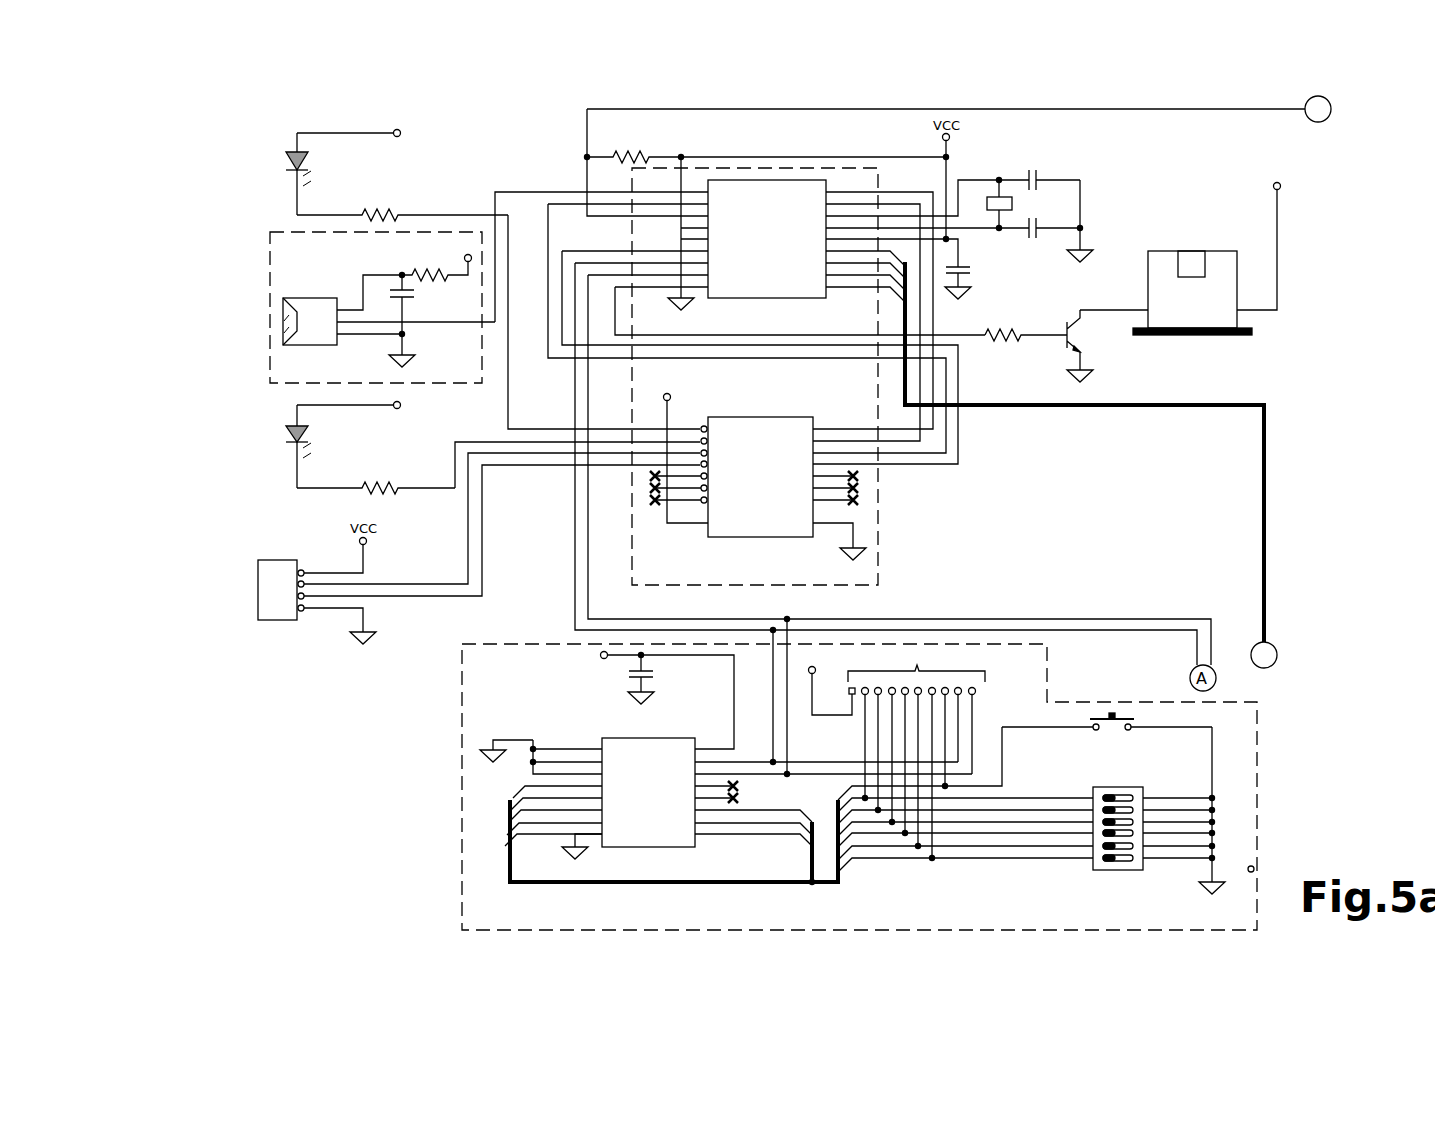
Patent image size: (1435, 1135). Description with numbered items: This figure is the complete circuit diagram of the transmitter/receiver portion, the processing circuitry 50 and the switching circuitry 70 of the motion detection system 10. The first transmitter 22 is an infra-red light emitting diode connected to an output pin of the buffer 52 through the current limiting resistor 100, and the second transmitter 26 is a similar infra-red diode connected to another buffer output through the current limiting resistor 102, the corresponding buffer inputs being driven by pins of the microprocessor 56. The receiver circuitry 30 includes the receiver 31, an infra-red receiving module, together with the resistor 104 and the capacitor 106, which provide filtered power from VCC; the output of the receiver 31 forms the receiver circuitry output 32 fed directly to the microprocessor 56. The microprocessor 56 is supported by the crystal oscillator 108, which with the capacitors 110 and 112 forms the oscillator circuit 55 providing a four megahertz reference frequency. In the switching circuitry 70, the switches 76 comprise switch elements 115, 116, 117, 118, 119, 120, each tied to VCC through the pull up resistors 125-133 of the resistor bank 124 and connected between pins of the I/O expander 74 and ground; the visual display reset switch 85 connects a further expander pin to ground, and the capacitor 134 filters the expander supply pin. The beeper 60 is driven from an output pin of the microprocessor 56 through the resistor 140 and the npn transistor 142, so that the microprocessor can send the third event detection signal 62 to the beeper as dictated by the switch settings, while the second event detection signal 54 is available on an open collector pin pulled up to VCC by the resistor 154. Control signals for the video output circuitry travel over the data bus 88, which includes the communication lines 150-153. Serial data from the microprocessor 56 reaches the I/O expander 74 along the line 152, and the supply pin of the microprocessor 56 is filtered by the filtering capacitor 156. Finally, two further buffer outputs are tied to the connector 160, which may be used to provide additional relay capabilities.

The motion detection system 10 is at (324, 731).
The first transmitter 22 is at (290, 152).
The second transmitter 26 is at (292, 428).
The receiver circuitry 30 is at (270, 281).
The receiver 31 is at (300, 298).
The receiver circuitry output 32 is at (565, 190).
The processing circuitry 50 is at (878, 500).
The buffer 52 is at (768, 538).
The second event detection signal 54 is at (787, 109).
The oscillator circuit 55 is at (1065, 205).
The microprocessor 56 is at (762, 300).
The beeper 60 is at (1217, 318).
The third event detection signal 62 is at (680, 335).
The switching circuitry 70 is at (462, 797).
The I/O expander 74 is at (623, 738).
The switches 76 is at (1101, 827).
The visual display reset switch 85 is at (1112, 712).
The data bus 88 is at (1268, 420).
The current limiting resistor 100 is at (385, 210).
The current limiting resistor 102 is at (382, 484).
The resistor 104 is at (414, 272).
The capacitor 106 is at (412, 295).
The crystal oscillator 108 is at (985, 200).
The capacitor 110 is at (1040, 172).
The capacitor 112 is at (1031, 238).
The switch element 115 is at (1108, 795).
The switch element 116 is at (1115, 808).
The switch element 117 is at (1100, 823).
The switch element 118 is at (1100, 836).
The switch element 119 is at (1097, 850).
The switch element 120 is at (1113, 866).
The resistor bank 124 is at (930, 704).
The pull up resistors 125-133 is at (917, 665).
The capacitor 134 is at (655, 677).
The resistor 140 is at (1002, 342).
The npn transistor 142 is at (1091, 342).
The communication lines 150-153 is at (1272, 518).
The serial data line 152 is at (575, 560).
The resistor / serial clock line 154 is at (633, 145).
The filtering capacitor 156 is at (972, 273).
The connector 160 is at (280, 620).